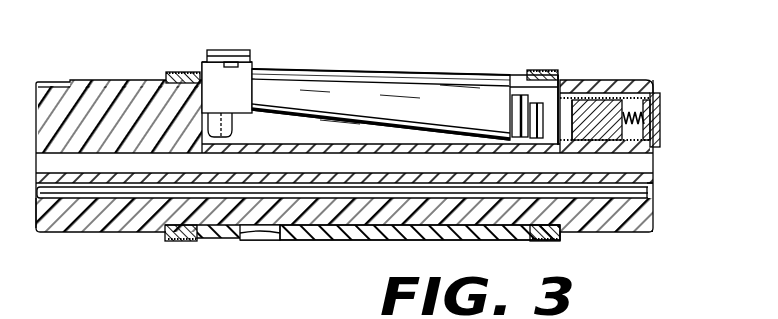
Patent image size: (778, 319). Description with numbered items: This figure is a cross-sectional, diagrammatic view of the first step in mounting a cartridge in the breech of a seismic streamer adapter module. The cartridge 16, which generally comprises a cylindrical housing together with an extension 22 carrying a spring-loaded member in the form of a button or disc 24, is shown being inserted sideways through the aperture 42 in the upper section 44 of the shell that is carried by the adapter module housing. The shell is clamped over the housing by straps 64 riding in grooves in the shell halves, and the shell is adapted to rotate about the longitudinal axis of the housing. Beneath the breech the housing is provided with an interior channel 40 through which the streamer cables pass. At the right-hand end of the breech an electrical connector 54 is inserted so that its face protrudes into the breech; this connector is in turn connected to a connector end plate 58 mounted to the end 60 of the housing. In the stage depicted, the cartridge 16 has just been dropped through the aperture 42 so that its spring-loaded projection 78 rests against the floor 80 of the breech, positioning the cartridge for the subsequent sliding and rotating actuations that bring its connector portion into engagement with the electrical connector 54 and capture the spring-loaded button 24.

The cartridge 16 is at (353, 72).
The extension 22 is at (240, 98).
The button or disc 24 is at (236, 50).
The interior channel 40 is at (651, 161).
The aperture 42 is at (424, 78).
The upper section of the shell 44 is at (553, 61).
The electrical connector 54 is at (612, 80).
The connector end plate 58 is at (644, 117).
The end of housing 60 is at (547, 93).
The straps 64 is at (183, 72).
The spring-loaded projection 78 is at (232, 128).
The floor of breech 80 is at (302, 128).